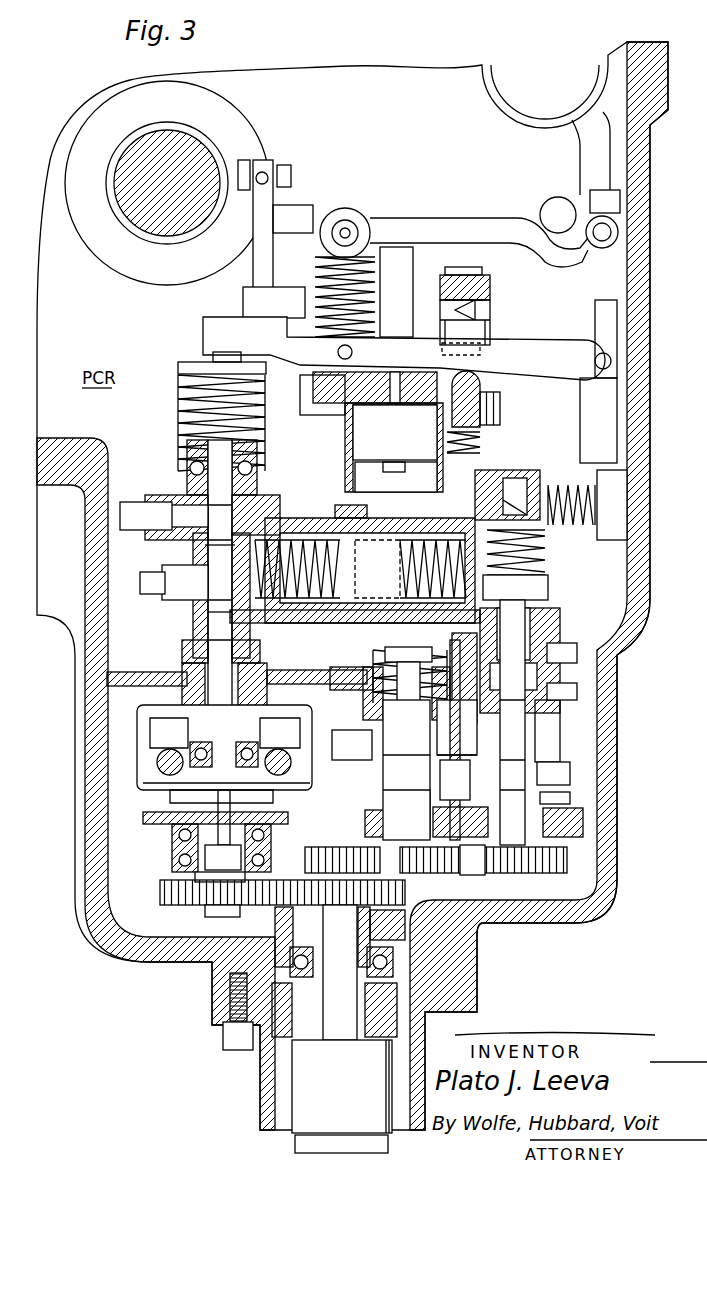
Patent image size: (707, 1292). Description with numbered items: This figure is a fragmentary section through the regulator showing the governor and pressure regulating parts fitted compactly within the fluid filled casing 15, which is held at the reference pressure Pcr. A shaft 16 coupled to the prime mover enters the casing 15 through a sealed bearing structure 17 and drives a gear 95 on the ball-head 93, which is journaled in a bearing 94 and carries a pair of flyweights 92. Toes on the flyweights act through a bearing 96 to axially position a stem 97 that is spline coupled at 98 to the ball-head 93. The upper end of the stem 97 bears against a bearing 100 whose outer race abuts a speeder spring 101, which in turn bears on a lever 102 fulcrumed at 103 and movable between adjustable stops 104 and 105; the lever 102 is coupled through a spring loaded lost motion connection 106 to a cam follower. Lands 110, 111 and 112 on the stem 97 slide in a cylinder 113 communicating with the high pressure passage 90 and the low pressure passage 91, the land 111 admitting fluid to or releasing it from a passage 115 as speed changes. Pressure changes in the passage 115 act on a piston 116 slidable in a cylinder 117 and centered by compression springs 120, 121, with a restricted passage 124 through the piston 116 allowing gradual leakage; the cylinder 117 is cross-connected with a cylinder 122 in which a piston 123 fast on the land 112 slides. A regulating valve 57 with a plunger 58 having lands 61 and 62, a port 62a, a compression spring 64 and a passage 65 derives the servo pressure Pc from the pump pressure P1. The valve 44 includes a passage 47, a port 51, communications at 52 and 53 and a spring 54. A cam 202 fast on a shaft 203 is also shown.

The casing 15 is at (650, 490).
The shaft 16 is at (310, 1157).
The sealed bearing structure 17 is at (258, 1045).
The valve 44 is at (568, 600).
The passage 47 is at (548, 648).
The port 51 is at (548, 768).
The cylinder communication with high pressure line 52 is at (500, 728).
The cylinder communication with case interior 53 is at (545, 803).
The spring 54 is at (525, 737).
The regulating valve 57 is at (365, 725).
The plunger 58 is at (400, 770).
The land 61 is at (400, 830).
The land 62 is at (425, 740).
The port 62a is at (432, 755).
The compression spring 64 is at (370, 707).
The passage 65 is at (460, 778).
The high pressure passage 90 is at (140, 505).
The low pressure passage 91 is at (158, 588).
The flyweights 92 is at (165, 718).
The ball-head 93 is at (160, 800).
The bearing 94 is at (172, 850).
The gear 95 is at (165, 890).
The bearing 96 is at (255, 752).
The stem 97 is at (215, 578).
The spline coupling 98 is at (223, 857).
The bearing 100 is at (258, 462).
The speeder spring 101 is at (262, 425).
The lever 102 is at (203, 335).
The fulcrum 103 is at (603, 370).
The adjustable stop 104 is at (470, 336).
The adjustable stop 105 is at (470, 382).
The spring loaded lost motion connection 106 is at (362, 352).
The land 110 is at (245, 502).
The land 111 is at (205, 546).
The land 112 is at (208, 612).
The cylinder 113 is at (210, 515).
The passage 115 is at (275, 528).
The piston 116 is at (382, 540).
The cylinder 117 is at (436, 538).
The compression spring 120 is at (300, 567).
The compression spring 121 is at (465, 586).
The cylinder 122 is at (205, 640).
The piston 123 is at (205, 650).
The restricted passage 124 is at (377, 569).
The cam 202 is at (105, 260).
The shaft 203 is at (162, 232).
The high pressure P1 is at (345, 745).